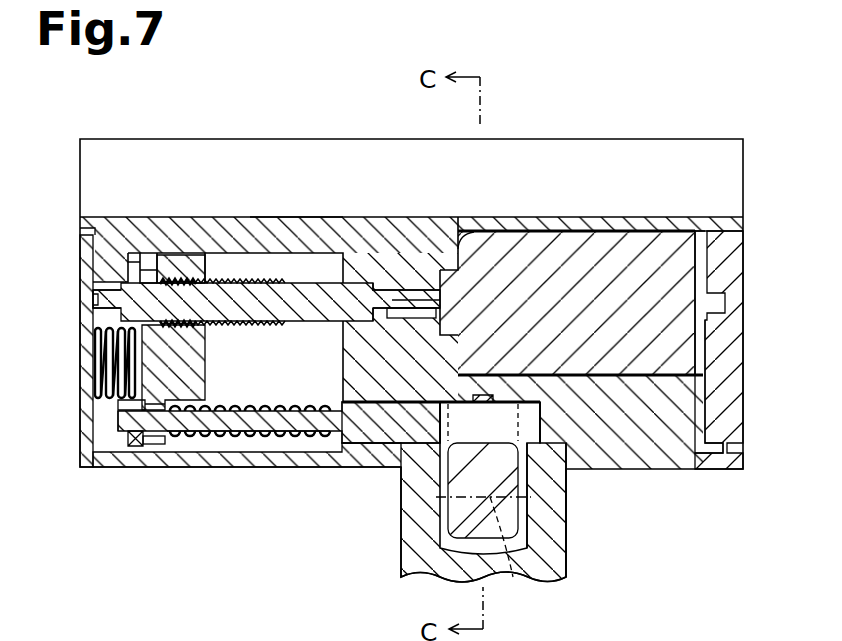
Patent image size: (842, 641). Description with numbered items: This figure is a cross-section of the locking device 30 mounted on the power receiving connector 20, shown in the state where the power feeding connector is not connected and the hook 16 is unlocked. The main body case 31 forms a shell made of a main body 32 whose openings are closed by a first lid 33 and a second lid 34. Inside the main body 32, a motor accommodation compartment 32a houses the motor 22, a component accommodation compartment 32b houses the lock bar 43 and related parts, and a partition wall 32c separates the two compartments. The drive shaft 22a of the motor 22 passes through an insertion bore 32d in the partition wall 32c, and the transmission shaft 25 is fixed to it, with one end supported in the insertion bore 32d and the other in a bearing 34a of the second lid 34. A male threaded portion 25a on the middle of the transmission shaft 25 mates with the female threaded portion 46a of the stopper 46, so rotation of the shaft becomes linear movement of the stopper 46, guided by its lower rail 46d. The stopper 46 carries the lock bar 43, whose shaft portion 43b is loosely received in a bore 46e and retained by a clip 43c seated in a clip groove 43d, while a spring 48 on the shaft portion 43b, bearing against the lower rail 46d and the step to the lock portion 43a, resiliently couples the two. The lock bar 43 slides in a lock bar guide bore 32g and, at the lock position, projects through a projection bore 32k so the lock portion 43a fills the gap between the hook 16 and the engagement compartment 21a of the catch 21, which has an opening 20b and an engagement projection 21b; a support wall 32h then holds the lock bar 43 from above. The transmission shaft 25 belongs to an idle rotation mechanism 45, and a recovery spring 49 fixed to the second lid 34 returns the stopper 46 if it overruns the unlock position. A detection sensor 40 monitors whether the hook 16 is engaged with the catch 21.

The locking device 30 is at (769, 158).
The main body case 31 is at (575, 139).
The main body 32 is at (425, 139).
The motor accommodation compartment 32a is at (642, 238).
The component accommodation compartment 32b is at (210, 260).
The partition wall 32c is at (470, 256).
The insertion bore 32d is at (432, 292).
The lock bar guide bore 32g is at (377, 400).
The support wall 32h is at (541, 413).
The projection bore 32k is at (442, 431).
The first lid 33 is at (745, 375).
The second lid 34 is at (80, 258).
The bearing 34a is at (93, 300).
The motor 22 is at (582, 230).
The drive shaft 22a is at (402, 294).
The transmission shaft 25 is at (308, 322).
The male threaded portion 25a is at (236, 283).
The detection sensor 40 is at (482, 397).
The lock bar 43 is at (328, 453).
The lock portion 43a is at (372, 444).
The shaft portion 43b is at (245, 444).
The clip 43c is at (125, 446).
The clip groove 43d is at (140, 448).
The idle rotation mechanism 45 is at (265, 206).
The stopper 46 is at (142, 262).
The female threaded portion 46a is at (188, 314).
The lower rail 46d is at (128, 402).
The bore 46e is at (162, 446).
The spring 48 is at (233, 403).
The recovery spring 49 is at (100, 386).
The hook 16 is at (447, 520).
The power receiving connector 20 is at (606, 576).
The opening 20b is at (568, 538).
The catch 21 is at (530, 469).
The engagement compartment 21a is at (523, 514).
The engagement projection 21b is at (519, 555).